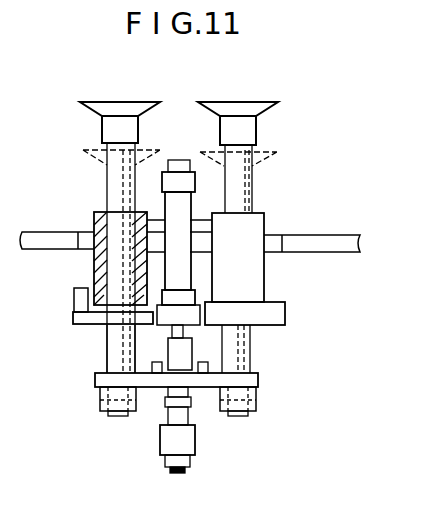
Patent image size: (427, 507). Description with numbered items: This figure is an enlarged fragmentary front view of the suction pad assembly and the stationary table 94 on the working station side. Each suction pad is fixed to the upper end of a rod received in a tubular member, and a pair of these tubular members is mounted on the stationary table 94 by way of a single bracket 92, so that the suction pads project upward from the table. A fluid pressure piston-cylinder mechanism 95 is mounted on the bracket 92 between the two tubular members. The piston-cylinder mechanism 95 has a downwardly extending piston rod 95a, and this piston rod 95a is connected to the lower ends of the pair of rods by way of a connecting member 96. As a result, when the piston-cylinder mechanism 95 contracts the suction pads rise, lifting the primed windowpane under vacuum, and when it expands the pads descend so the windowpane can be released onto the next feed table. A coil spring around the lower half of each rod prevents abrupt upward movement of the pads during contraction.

The stationary table 94 is at (336, 242).
The fluid pressure piston-cylinder mechanism 95 is at (179, 164).
The bracket 92 is at (285, 316).
The connecting member 96 is at (258, 380).
The piston rod 95a is at (188, 415).